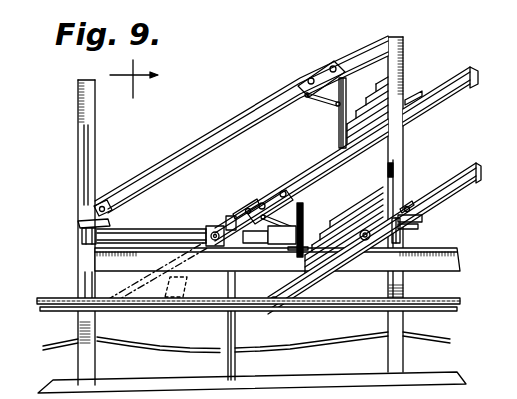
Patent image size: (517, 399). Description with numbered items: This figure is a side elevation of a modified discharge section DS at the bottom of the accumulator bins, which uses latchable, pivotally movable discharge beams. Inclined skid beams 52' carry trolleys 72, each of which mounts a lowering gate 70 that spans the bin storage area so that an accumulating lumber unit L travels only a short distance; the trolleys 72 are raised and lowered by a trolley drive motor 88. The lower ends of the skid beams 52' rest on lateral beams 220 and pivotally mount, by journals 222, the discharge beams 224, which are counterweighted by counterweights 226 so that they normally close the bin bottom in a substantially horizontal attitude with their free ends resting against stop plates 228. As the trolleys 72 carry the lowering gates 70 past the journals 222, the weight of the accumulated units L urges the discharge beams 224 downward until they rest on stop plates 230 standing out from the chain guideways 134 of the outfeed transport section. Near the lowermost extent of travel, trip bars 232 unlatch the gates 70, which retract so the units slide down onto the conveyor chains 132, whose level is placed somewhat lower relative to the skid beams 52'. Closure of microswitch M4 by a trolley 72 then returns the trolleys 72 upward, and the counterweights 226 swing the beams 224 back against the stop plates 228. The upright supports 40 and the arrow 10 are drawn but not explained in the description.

The direction of travel arrow 10 is at (128, 73).
The upright post 40 is at (78, 175).
The microswitch M4 is at (100, 197).
The skid beam 52' is at (288, 175).
The trolley 72 is at (322, 73).
The trolley drive motor 88 is at (323, 100).
The lowering gate 70 is at (339, 121).
The lumber unit L is at (184, 293).
The trip bar 232 is at (80, 223).
The stop plate 228 is at (84, 238).
The discharge section DS is at (165, 213).
The discharge beam 224 is at (157, 232).
The journal 222 is at (208, 233).
The lateral beam 220 is at (233, 250).
The counterweight 226 is at (292, 251).
The stop plate 230 is at (115, 307).
The chain guideway 134 is at (340, 305).
The conveyor chain 132 is at (160, 339).